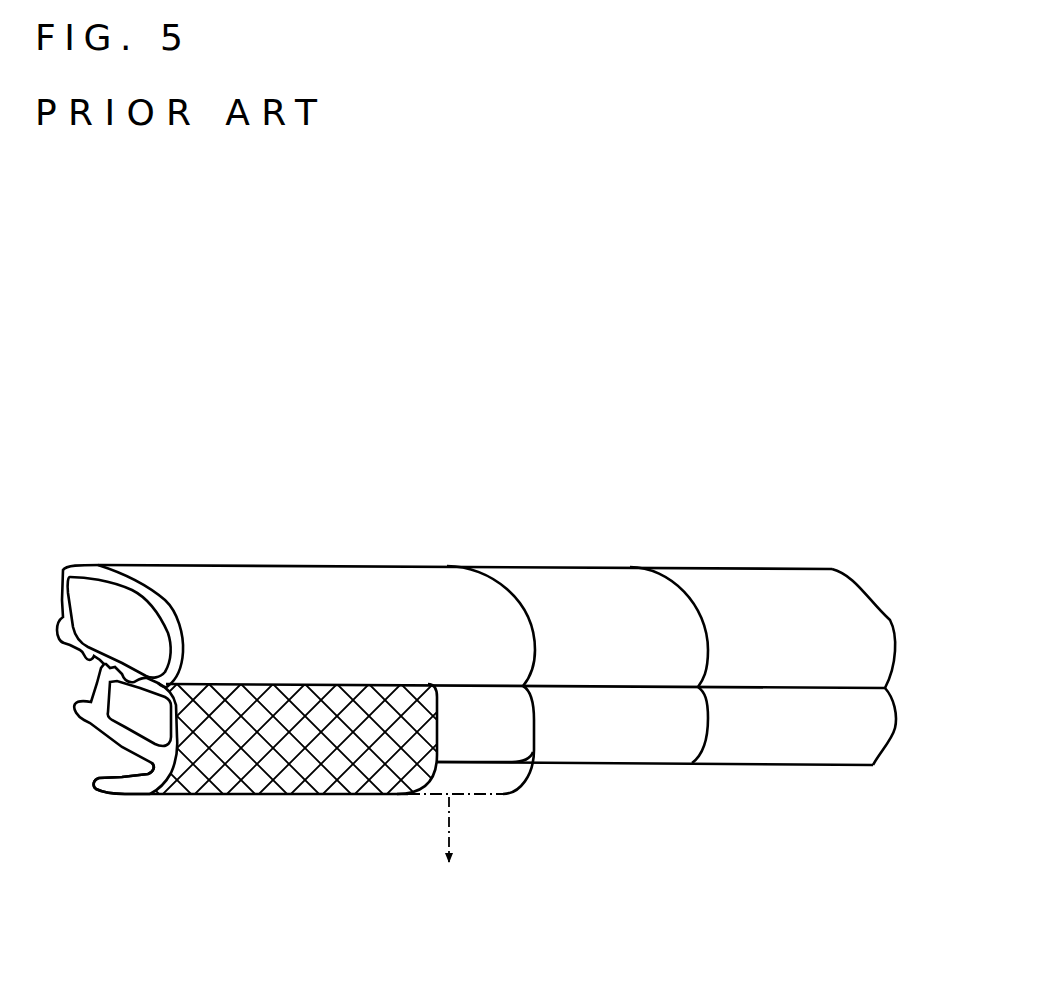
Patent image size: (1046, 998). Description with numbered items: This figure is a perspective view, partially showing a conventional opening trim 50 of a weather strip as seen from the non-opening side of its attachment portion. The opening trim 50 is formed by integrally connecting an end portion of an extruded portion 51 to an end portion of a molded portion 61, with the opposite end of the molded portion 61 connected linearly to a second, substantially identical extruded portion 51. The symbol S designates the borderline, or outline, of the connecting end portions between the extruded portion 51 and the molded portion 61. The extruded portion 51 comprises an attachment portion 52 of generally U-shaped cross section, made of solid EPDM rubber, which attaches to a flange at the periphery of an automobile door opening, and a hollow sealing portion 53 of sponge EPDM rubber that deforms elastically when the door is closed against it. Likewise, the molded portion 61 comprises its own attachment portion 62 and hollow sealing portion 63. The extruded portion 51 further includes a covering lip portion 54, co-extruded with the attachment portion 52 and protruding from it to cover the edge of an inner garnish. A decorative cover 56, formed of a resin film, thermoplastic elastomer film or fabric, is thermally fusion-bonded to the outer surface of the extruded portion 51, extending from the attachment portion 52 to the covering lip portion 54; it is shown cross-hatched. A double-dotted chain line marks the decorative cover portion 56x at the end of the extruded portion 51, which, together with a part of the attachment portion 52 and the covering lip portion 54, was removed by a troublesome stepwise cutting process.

The opening trim 50 is at (197, 547).
The extruded portion 51 is at (268, 565).
The attachment portion 52 is at (455, 700).
The hollow sealing portion 53 is at (353, 587).
The covering lip portion 54 is at (120, 785).
The decorative cover 56 is at (282, 767).
The decorative cover portion 56x is at (454, 854).
The molded portion 61 is at (488, 567).
The attachment portion 62 is at (628, 750).
The hollow sealing portion 63 is at (567, 587).
The borderline S is at (532, 637).